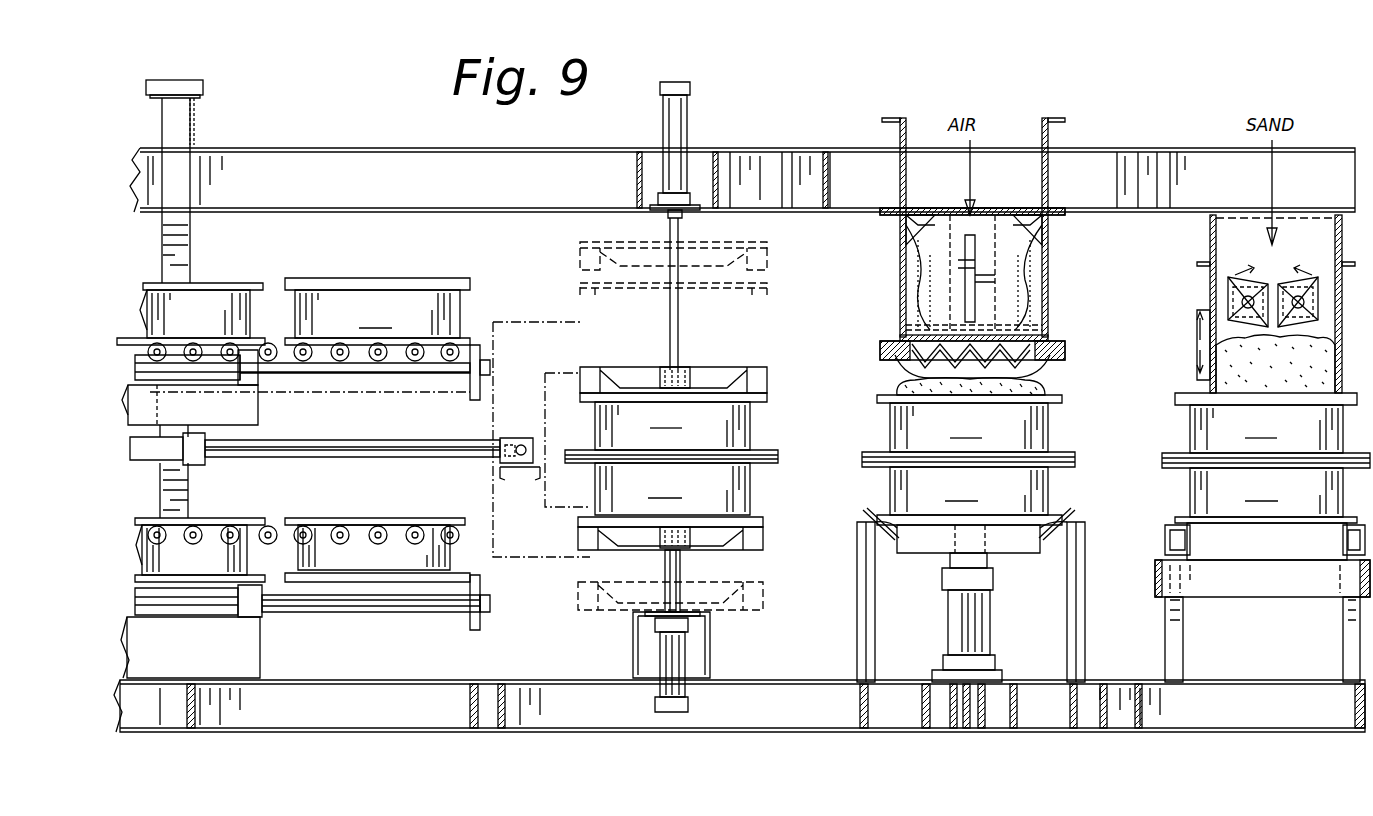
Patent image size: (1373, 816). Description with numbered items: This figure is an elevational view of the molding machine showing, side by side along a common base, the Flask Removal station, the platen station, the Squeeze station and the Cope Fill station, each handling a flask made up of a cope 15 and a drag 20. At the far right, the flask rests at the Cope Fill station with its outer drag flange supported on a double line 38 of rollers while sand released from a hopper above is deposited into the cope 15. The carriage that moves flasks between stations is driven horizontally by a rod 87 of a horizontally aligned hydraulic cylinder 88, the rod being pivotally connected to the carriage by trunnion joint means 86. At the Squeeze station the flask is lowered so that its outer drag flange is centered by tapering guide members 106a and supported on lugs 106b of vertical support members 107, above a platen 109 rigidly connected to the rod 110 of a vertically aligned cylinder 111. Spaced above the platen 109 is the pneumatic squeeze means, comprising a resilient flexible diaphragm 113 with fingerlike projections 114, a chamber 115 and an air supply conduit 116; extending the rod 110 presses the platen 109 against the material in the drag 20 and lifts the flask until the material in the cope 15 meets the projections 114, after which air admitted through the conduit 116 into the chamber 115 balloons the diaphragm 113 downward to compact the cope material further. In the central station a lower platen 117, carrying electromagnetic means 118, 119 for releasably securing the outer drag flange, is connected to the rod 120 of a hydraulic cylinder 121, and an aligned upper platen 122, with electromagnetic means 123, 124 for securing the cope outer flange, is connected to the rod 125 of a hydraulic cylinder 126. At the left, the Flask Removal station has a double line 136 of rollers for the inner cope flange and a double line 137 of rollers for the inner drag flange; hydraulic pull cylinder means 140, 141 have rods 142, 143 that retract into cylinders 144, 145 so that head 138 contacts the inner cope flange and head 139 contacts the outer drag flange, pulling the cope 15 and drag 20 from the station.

The cope 15 is at (814, 365).
The drag 20 is at (358, 548).
The double line of rollers 38 is at (1335, 535).
The trunnion joint means 86 is at (505, 465).
The rod 87 is at (448, 455).
The hydraulic cylinder 88 is at (193, 465).
The tapering guide members 106a is at (878, 520).
The lugs 106b is at (880, 535).
The vertical support members 107 is at (855, 610).
The platen 109 is at (1035, 530).
The rod 110 is at (985, 557).
The cylinder 111 is at (985, 622).
The resilient flexible diaphragm 113 is at (1060, 354).
The fingerlike projections 114 is at (1010, 378).
The chamber 115 is at (1015, 345).
The air supply conduit 116 is at (968, 283).
The lower platen 117 is at (645, 520).
The electromagnetic means 118 is at (760, 533).
The electromagnetic means 119 is at (585, 528).
The rod 120 is at (678, 568).
The hydraulic cylinder 121 is at (675, 656).
The upper platen 122 is at (705, 392).
The electromagnetic means 123 is at (762, 387).
The electromagnetic means 124 is at (590, 387).
The rod 125 is at (670, 226).
The hydraulic cylinder 126 is at (667, 118).
The double line of rollers 136 is at (305, 370).
The double line of rollers 137 is at (272, 525).
The head 138 is at (478, 400).
The head 139 is at (480, 605).
The hydraulic pull cylinder means 140 is at (280, 348).
The hydraulic pull cylinder means 141 is at (290, 672).
The rod 142 is at (332, 376).
The rod 143 is at (342, 610).
The cylinder 144 is at (178, 365).
The cylinder 145 is at (190, 647).